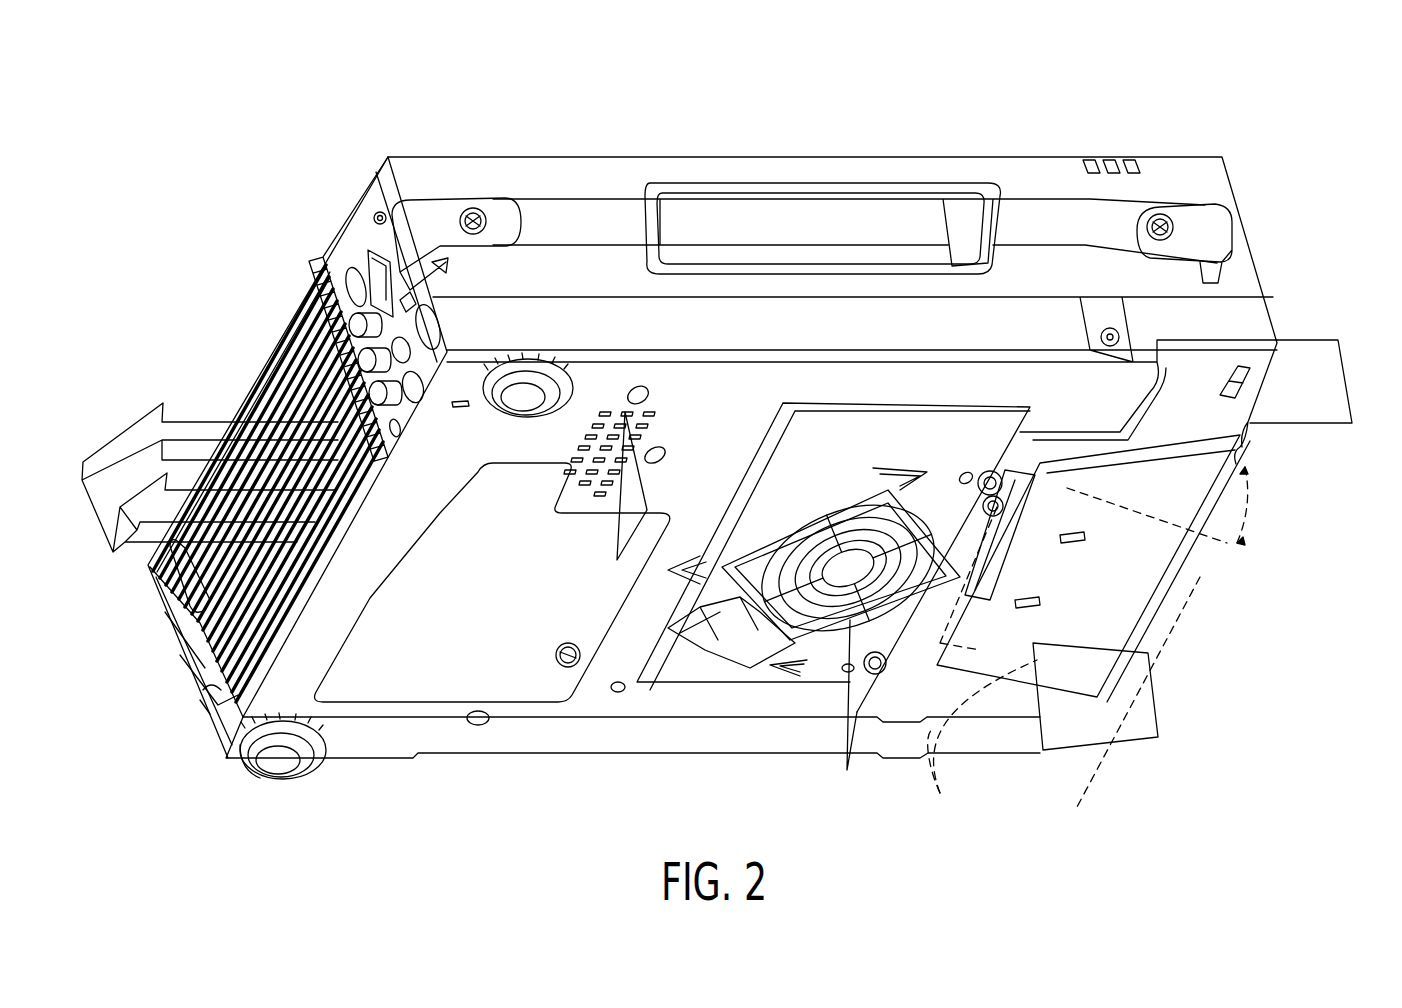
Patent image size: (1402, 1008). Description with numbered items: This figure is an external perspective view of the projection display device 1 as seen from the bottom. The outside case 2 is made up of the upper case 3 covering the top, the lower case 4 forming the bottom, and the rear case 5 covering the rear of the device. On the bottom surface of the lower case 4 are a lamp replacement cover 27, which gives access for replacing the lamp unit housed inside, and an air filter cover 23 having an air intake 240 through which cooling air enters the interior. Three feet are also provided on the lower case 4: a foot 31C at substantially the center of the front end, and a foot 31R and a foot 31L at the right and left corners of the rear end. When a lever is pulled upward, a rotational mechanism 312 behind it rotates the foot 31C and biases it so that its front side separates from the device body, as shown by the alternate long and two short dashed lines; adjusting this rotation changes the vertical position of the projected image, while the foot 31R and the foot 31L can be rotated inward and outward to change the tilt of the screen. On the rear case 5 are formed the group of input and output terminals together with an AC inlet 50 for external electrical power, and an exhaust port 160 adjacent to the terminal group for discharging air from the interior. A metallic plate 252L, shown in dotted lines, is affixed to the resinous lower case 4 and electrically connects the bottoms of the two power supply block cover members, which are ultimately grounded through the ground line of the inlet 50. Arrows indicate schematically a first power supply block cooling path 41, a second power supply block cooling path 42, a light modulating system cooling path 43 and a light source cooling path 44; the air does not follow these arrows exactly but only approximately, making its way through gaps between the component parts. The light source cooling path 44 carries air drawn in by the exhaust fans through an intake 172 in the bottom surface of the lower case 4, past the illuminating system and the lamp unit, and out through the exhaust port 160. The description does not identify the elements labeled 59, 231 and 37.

The projection display device 1 is at (212, 256).
The outside case 2 is at (342, 78).
The upper case 3 is at (412, 162).
The lower case 4 is at (470, 310).
The rear case 5 is at (373, 235).
The connectors 59 is at (370, 392).
The exhaust port 160 is at (278, 392).
The AC inlet 50 is at (215, 657).
The foot 31L is at (285, 770).
The foot 31R is at (530, 405).
The foot 31C is at (1195, 590).
The lamp replacement cover 27 is at (517, 685).
The light source cooling path 44 is at (620, 537).
The intake 172 is at (640, 420).
The air filter cover 23 is at (757, 637).
The fan guard 231 is at (763, 547).
The fan 37 is at (840, 517).
The air intake 240 is at (813, 625).
The light modulating system cooling path 43 is at (873, 720).
The rotational mechanism 312 is at (998, 557).
The first power supply block cooling path 41 is at (1137, 723).
The metallic plate 252L is at (940, 793).
The second power supply block cooling path 42 is at (1308, 357).